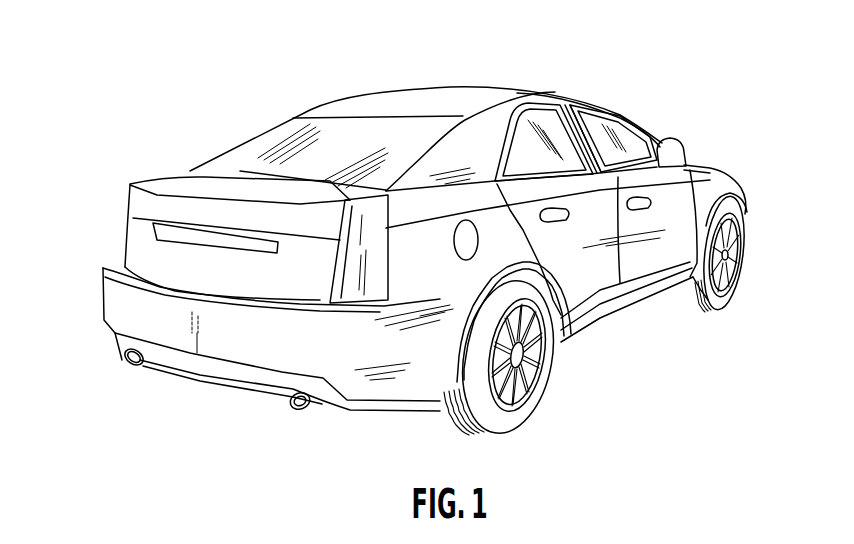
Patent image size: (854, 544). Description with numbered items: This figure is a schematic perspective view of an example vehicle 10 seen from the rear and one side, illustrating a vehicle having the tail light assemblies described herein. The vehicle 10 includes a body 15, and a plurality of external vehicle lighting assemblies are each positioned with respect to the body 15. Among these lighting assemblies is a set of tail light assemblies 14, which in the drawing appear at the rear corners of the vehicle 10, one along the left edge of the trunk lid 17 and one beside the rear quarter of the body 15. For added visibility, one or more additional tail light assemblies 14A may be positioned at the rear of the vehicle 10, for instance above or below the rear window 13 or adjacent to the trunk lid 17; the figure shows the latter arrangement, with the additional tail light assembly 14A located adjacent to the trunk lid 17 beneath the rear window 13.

The vehicle 10 is at (631, 63).
The rear window 13 is at (321, 76).
The tail light assembly 14 is at (115, 225).
The additional tail light assembly 14A is at (163, 178).
The body 15 is at (396, 213).
The trunk lid 17 is at (210, 125).